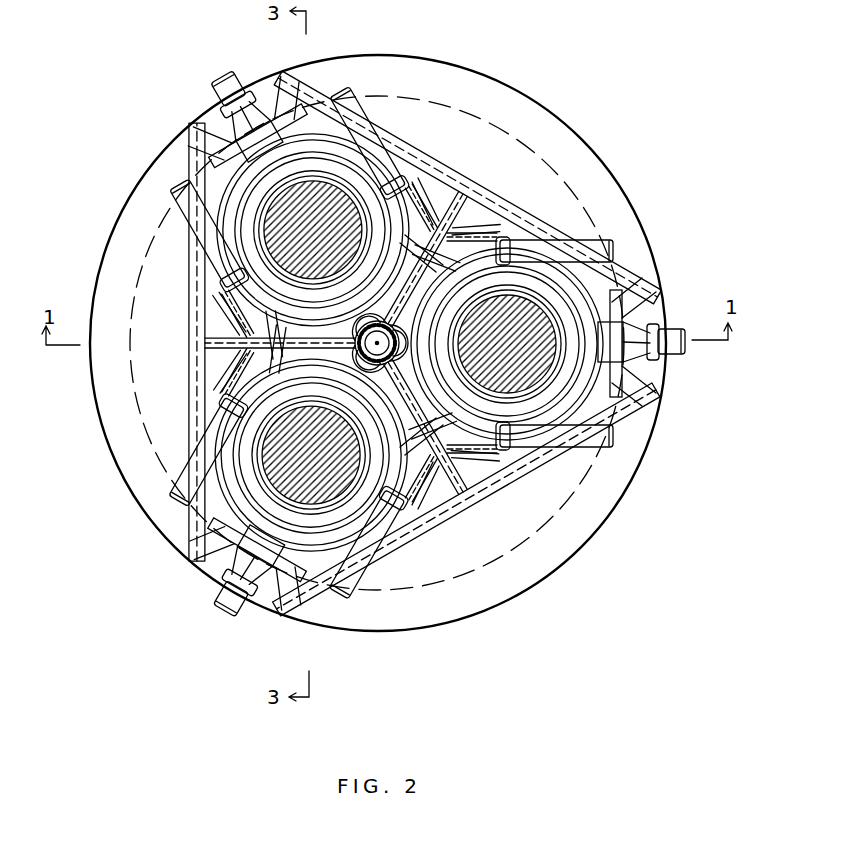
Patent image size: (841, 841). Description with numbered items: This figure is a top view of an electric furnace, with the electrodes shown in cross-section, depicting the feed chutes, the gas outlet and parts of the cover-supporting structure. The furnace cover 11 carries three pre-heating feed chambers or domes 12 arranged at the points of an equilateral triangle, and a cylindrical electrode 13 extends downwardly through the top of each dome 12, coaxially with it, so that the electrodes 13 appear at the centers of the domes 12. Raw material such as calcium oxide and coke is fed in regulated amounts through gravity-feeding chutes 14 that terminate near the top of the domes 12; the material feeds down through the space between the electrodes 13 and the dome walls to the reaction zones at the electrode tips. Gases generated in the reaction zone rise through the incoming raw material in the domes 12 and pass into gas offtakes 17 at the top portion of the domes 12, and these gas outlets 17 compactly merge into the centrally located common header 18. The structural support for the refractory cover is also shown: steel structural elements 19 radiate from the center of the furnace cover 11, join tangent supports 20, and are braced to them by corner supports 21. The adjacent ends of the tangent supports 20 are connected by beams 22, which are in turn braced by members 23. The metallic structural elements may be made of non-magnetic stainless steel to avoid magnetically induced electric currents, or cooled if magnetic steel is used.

The furnace cover 11 is at (378, 343).
The pre-heating feed chambers or domes 12 is at (391, 342).
The cylindrical electrodes 13 is at (300, 236).
The gravity-feeding chutes 14 is at (206, 83).
The gas offtakes 17 is at (366, 308).
The common header 18 is at (350, 360).
The steel structural elements 19 is at (215, 335).
The tangent supports 20 is at (194, 278).
The corner supports 21 is at (240, 368).
The beams 22 is at (292, 103).
The bracing members 23 is at (330, 116).